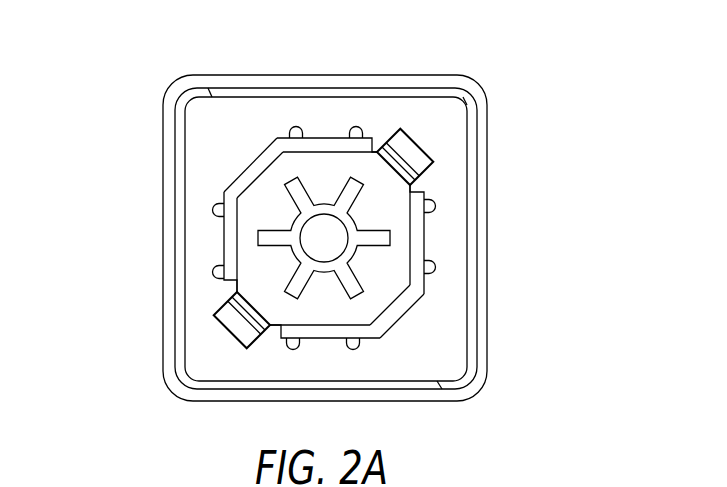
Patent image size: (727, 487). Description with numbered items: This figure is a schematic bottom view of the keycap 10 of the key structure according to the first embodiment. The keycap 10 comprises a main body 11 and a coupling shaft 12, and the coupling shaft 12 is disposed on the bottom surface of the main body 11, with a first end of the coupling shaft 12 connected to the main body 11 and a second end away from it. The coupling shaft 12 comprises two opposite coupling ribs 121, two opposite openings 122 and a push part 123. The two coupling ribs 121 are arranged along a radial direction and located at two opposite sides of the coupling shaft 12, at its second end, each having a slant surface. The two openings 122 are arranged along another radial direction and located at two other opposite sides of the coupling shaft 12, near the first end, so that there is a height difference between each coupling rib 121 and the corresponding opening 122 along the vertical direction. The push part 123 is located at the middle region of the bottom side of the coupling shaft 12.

The keycap 10 is at (75, 31).
The main body 11 is at (238, 107).
The coupling shaft 12 is at (330, 146).
The coupling ribs 121 is at (413, 150).
The openings 122 is at (248, 180).
The push part 123 is at (383, 237).